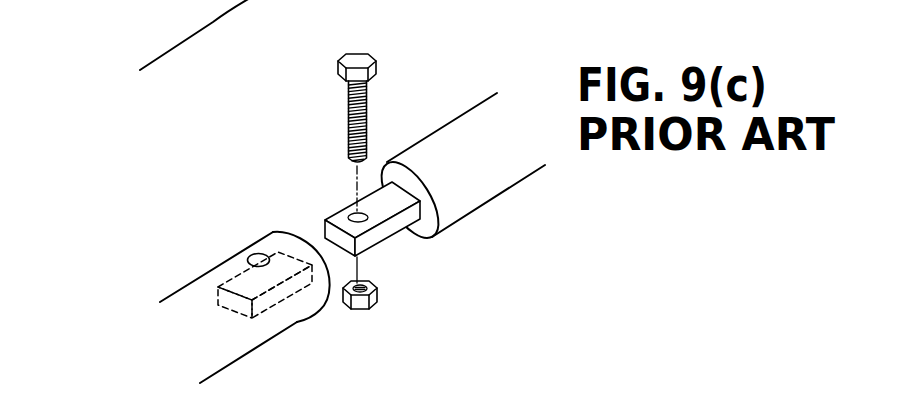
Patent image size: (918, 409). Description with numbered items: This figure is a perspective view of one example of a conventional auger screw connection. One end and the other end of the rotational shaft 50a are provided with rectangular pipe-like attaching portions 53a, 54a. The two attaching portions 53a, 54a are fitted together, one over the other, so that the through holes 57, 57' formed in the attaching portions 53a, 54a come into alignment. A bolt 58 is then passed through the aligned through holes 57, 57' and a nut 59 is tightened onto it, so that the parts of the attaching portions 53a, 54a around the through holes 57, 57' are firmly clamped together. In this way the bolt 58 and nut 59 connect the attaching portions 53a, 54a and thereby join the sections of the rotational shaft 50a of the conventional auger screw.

The rotational shaft 50a is at (464, 114).
The attaching portion 53a is at (383, 208).
The attaching portion 54a is at (283, 249).
The through hole 57 is at (337, 195).
The through hole 57' is at (239, 220).
The bolt 58 is at (373, 62).
The nut 59 is at (378, 295).